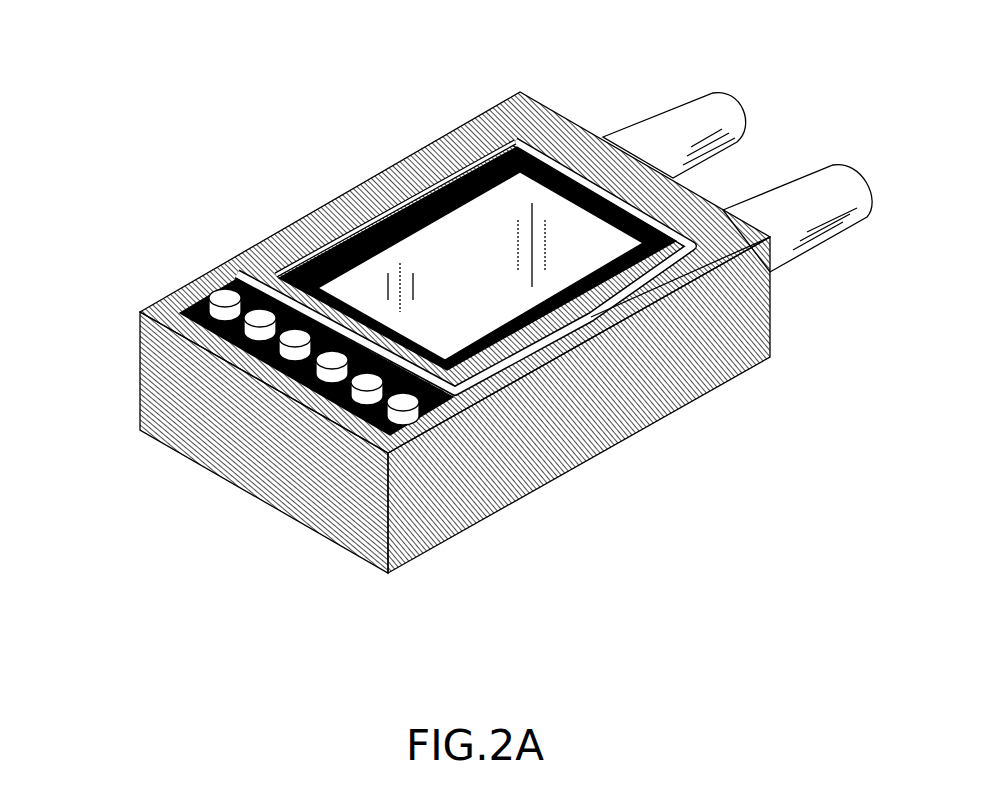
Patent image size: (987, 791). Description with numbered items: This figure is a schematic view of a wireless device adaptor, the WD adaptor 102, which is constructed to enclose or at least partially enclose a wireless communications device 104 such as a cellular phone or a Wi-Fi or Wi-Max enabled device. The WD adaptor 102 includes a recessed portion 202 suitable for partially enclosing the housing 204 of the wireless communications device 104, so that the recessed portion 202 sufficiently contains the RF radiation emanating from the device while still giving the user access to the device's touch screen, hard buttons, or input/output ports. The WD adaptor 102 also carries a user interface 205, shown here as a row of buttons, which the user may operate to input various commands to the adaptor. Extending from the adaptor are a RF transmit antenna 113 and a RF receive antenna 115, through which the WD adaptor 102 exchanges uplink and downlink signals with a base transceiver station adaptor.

The WD adaptor 102 is at (172, 396).
The wireless communications device 104 is at (497, 210).
The RF transmit antenna 113 is at (700, 115).
The RF receive antenna 115 is at (835, 183).
The recessed portion 202 is at (590, 318).
The housing 204 is at (308, 286).
The user interface 205 is at (193, 308).